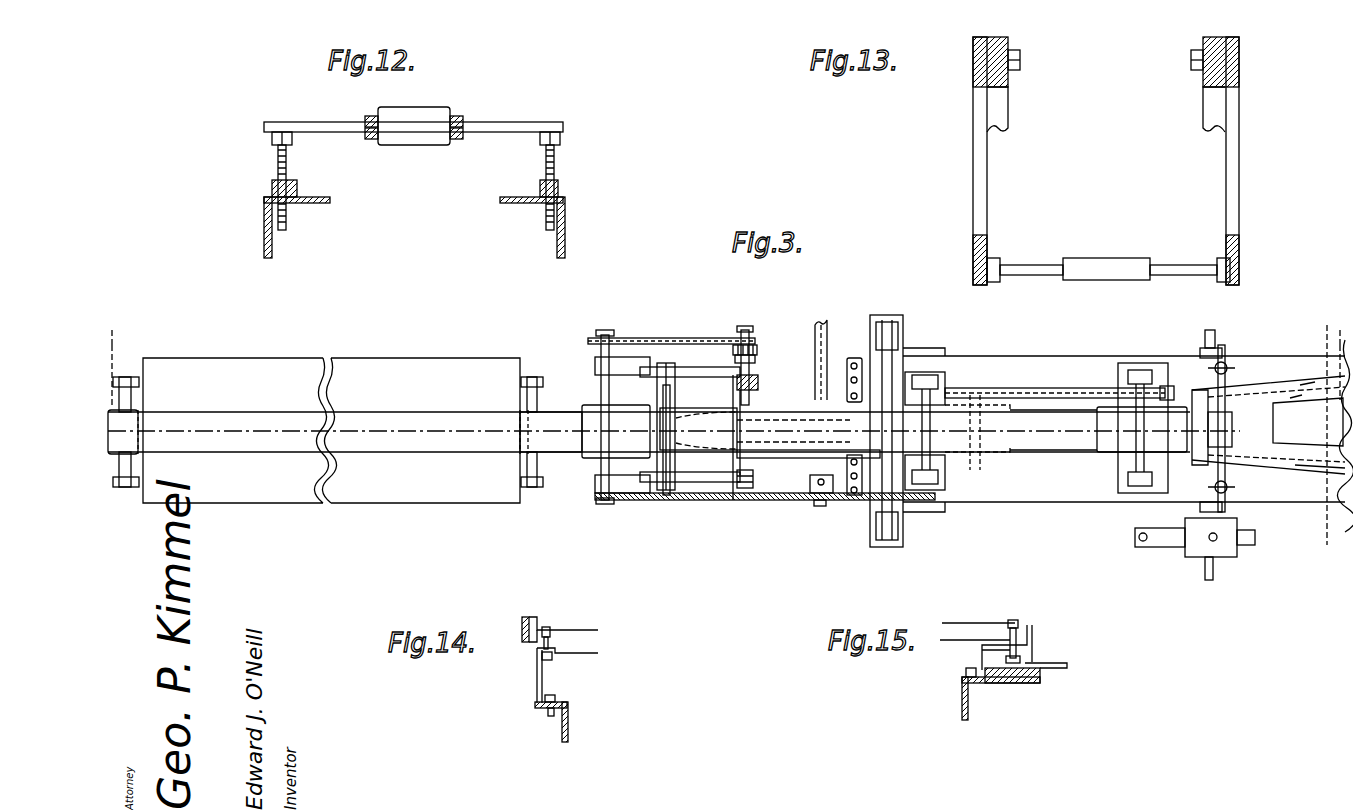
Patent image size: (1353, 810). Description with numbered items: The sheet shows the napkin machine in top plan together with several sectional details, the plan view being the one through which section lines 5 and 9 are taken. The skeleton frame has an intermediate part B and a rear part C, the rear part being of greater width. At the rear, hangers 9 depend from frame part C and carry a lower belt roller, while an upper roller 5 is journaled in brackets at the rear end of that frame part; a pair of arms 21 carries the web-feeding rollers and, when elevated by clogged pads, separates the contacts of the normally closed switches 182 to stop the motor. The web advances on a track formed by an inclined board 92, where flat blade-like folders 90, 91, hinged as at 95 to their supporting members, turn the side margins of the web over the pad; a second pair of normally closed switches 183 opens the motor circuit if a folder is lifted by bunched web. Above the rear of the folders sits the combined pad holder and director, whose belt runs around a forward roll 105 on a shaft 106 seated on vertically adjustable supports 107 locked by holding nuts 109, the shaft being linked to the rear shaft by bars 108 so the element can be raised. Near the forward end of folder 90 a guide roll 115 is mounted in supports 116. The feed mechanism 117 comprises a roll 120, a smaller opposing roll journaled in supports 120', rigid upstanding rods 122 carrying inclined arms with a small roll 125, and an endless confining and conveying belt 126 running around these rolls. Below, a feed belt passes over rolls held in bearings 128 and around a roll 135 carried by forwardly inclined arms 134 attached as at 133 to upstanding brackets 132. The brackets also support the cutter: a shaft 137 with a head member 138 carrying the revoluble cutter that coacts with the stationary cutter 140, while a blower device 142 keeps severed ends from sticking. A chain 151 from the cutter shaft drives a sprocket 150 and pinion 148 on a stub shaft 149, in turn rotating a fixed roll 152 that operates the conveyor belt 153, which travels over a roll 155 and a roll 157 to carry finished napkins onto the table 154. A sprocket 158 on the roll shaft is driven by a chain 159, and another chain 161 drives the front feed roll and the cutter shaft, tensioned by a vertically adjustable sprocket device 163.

In FIG. 3, the upper roller 5 is at (728, 358).
In FIG. 3, the hangers 9 is at (1325, 428).
In FIG. 14, the arms 21 is at (522, 625).
In FIG. 15, the folder 90 is at (1050, 663).
In FIG. 3, the folder 91 is at (1300, 400).
In FIG. 3, the plate or board 92 is at (1265, 470).
In FIG. 3, the hinge 95 is at (1310, 470).
In FIG. 12, the roll 105 is at (423, 112).
In FIG. 12, the shaft 106 is at (521, 122).
In FIG. 12, the vertically adjustable supports 107 is at (555, 160).
In FIG. 12, the bars 108 is at (368, 116).
In FIG. 12, the holding nuts 109 is at (558, 186).
In FIG. 3, the guide roll 115 is at (1230, 415).
In FIG. 3, the supports 116 is at (1225, 350).
In FIG. 3, the feed mechanism 117 is at (1058, 415).
In FIG. 3, the roll 120 is at (1121, 448).
In FIG. 3, the supports 120' is at (975, 383).
In FIG. 3, the rigid upstanding rods 122 is at (850, 360).
In FIG. 3, the roll 125 is at (665, 495).
In FIG. 3, the endless confining and conveying belt 126 is at (905, 378).
In FIG. 3, the bearings 128 is at (880, 528).
In FIG. 13, the brackets 132 is at (998, 110).
In FIG. 3, the brackets 132 is at (760, 375).
In FIG. 13, the attachment point 133 is at (1236, 58).
In FIG. 13, the arms 134 is at (978, 130).
In FIG. 3, the arms 134 is at (690, 367).
In FIG. 13, the roll 135 is at (1095, 265).
In FIG. 3, the shaft 137 is at (598, 345).
In FIG. 3, the head member 138 is at (620, 418).
In FIG. 3, the stationary cutter 140 is at (658, 378).
In FIG. 3, the blower device 142 is at (838, 330).
In FIG. 3, the pinion 148 is at (758, 345).
In FIG. 3, the stub shaft 149 is at (745, 326).
In FIG. 3, the sprocket 150 is at (755, 338).
In FIG. 3, the endless chain 151 is at (662, 338).
In FIG. 3, the fixed roll 152 is at (740, 408).
In FIG. 3, the conveyor belt 153 is at (556, 405).
In FIG. 3, the table 154 is at (428, 358).
In FIG. 3, the roll 155 is at (535, 468).
In FIG. 3, the roll 157 is at (135, 408).
In FIG. 3, the sprocket 158 is at (1168, 388).
In FIG. 3, the endless chain 159 is at (994, 388).
In FIG. 3, the endless chain 161 is at (752, 500).
In FIG. 3, the vertically adjustable sprocket device 163 is at (815, 510).
In FIG. 14, the normally closed switches 182 is at (525, 675).
In FIG. 15, the normally closed switches 183 is at (970, 663).
In FIG. 12, the intermediate frame part B is at (565, 236).
In FIG. 15, the intermediate frame part B is at (960, 702).
In FIG. 14, the rear frame part C is at (560, 728).